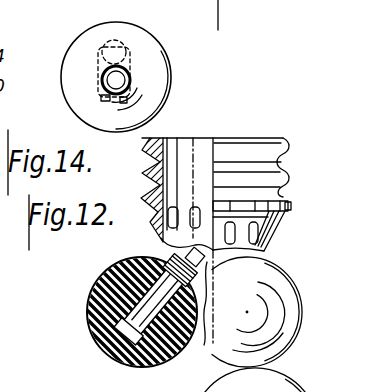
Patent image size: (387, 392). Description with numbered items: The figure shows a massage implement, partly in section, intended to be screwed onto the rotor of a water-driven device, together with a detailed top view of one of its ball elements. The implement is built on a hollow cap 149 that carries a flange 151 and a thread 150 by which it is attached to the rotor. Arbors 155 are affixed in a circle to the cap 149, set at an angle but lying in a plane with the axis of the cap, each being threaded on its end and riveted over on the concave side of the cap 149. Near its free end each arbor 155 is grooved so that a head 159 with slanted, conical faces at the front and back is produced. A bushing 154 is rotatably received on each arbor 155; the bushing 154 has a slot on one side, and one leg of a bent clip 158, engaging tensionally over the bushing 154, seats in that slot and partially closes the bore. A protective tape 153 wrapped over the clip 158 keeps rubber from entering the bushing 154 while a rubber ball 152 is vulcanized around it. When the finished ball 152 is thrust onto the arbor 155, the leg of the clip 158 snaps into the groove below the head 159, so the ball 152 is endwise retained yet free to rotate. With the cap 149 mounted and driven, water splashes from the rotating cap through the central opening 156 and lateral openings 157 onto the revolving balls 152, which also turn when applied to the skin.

In FIG. 12, the hollow cap 149 is at (285, 210).
In FIG. 12, the thread 150 is at (283, 165).
In FIG. 12, the flange 151 is at (291, 201).
In FIG. 14, the rubber ball 152 is at (137, 77).
In FIG. 12, the rubber ball 152 is at (90, 356).
In FIG. 12, the protective tape 153 is at (150, 256).
In FIG. 14, the bushing 154 is at (138, 88).
In FIG. 12, the bushing 154 is at (147, 191).
In FIG. 12, the arbor 155 is at (262, 252).
In FIG. 12, the central opening 156 is at (186, 348).
In FIG. 12, the lateral opening 157 is at (272, 228).
In FIG. 14, the clip 158 is at (83, 81).
In FIG. 12, the clip 158 is at (98, 303).
In FIG. 12, the head 159 is at (117, 352).